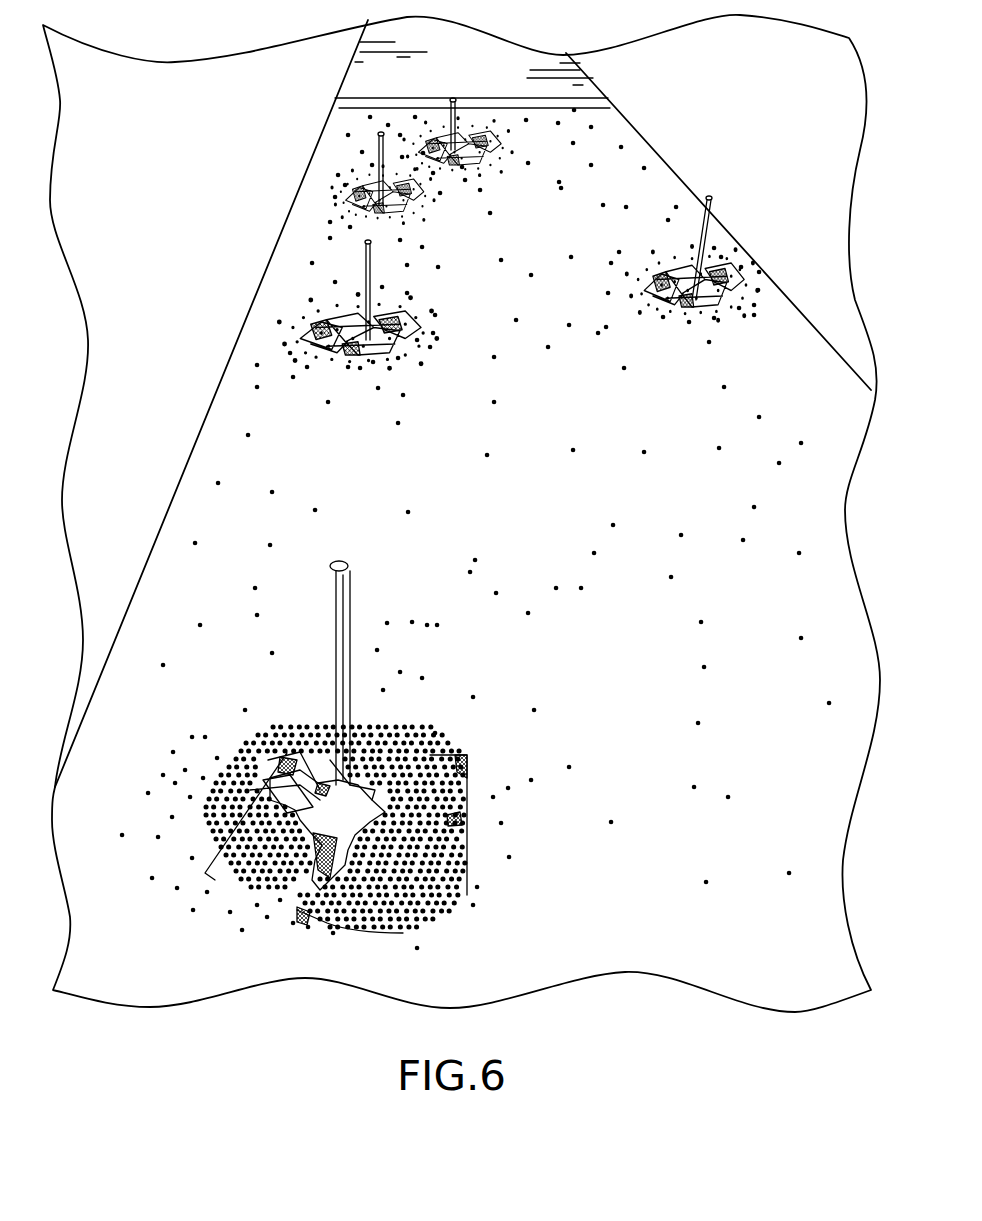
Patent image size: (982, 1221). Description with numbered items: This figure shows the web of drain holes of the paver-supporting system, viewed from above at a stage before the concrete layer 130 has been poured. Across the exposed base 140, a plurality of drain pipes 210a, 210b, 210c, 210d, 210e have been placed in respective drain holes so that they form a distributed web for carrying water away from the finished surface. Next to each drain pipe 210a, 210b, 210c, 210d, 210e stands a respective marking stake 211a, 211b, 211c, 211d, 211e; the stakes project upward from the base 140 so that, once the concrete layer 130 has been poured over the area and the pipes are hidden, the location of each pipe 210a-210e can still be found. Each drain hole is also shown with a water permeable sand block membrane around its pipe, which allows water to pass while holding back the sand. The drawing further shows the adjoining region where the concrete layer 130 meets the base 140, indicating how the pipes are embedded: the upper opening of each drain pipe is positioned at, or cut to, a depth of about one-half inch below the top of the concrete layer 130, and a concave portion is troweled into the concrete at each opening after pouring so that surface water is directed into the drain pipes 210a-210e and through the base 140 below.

The concrete layer 130 is at (362, 80).
The base 140 is at (495, 99).
The marking stake 211a is at (450, 112).
The marking stake 211b is at (378, 160).
The marking stake 211c is at (365, 302).
The marking stake 211d is at (704, 226).
The marking stake 211e is at (338, 633).
The drain pipe 210a is at (483, 172).
The drain pipe 210b is at (432, 224).
The drain pipe 210c is at (336, 370).
The drain pipe 210d is at (678, 320).
The drain pipe 210e is at (462, 737).